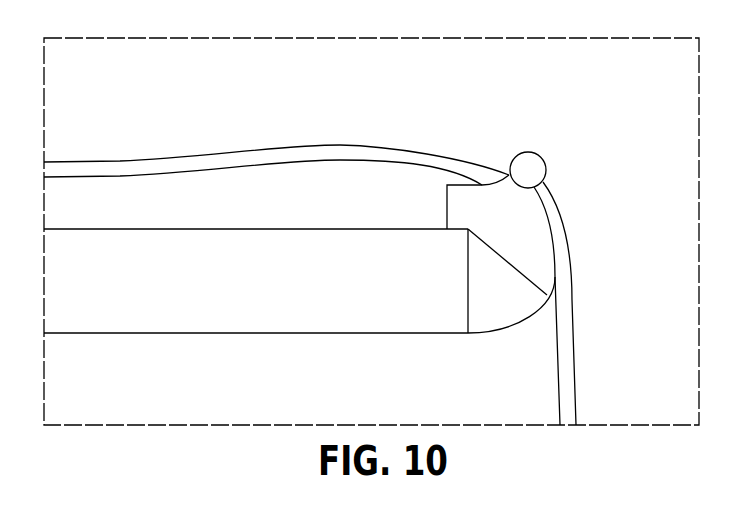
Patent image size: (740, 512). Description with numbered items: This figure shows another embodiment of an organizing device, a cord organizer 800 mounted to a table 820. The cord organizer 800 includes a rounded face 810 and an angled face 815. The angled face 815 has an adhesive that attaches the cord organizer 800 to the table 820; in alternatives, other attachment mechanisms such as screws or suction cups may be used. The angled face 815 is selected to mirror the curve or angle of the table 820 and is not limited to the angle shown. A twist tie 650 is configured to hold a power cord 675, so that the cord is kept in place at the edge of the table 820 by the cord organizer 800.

The rounded face 810 is at (453, 182).
The twist tie 650 is at (539, 155).
The cord organizer 800 is at (533, 233).
The power cord 675 is at (564, 308).
The angled face 815 is at (455, 231).
The table 820 is at (212, 318).